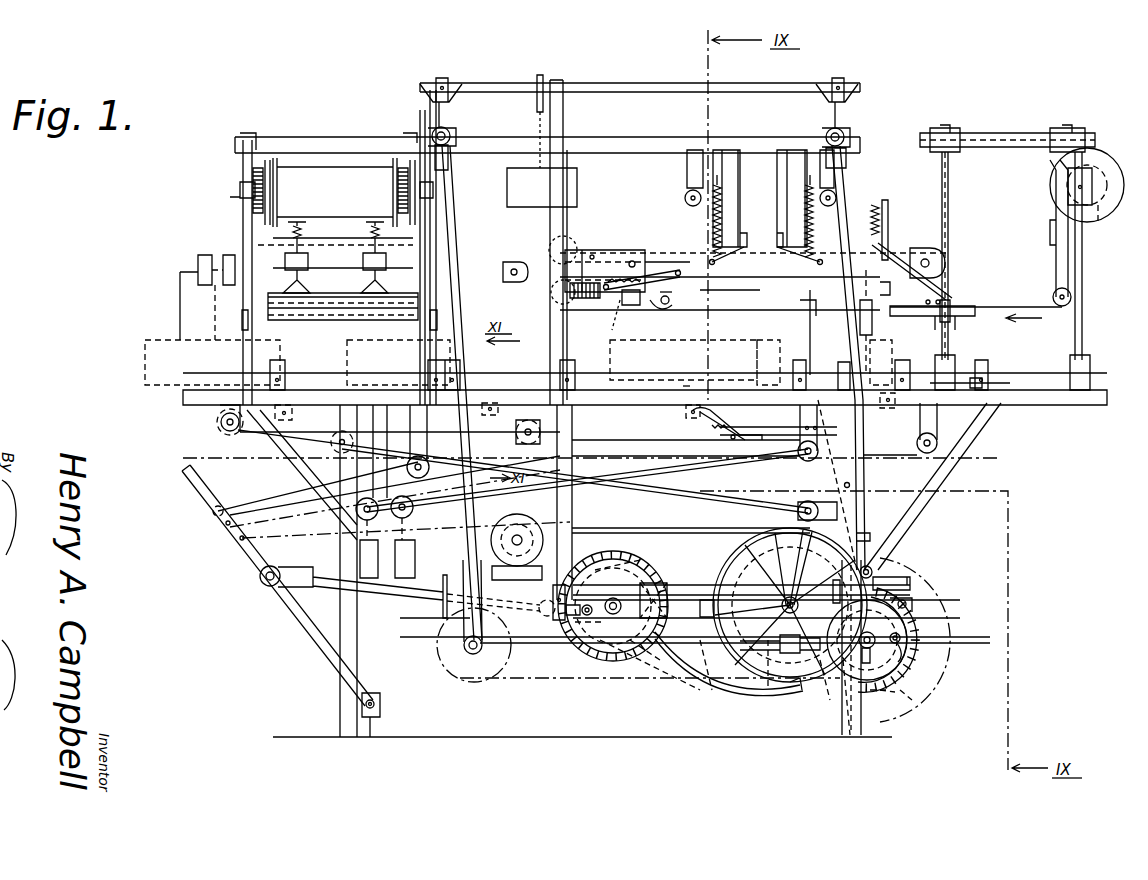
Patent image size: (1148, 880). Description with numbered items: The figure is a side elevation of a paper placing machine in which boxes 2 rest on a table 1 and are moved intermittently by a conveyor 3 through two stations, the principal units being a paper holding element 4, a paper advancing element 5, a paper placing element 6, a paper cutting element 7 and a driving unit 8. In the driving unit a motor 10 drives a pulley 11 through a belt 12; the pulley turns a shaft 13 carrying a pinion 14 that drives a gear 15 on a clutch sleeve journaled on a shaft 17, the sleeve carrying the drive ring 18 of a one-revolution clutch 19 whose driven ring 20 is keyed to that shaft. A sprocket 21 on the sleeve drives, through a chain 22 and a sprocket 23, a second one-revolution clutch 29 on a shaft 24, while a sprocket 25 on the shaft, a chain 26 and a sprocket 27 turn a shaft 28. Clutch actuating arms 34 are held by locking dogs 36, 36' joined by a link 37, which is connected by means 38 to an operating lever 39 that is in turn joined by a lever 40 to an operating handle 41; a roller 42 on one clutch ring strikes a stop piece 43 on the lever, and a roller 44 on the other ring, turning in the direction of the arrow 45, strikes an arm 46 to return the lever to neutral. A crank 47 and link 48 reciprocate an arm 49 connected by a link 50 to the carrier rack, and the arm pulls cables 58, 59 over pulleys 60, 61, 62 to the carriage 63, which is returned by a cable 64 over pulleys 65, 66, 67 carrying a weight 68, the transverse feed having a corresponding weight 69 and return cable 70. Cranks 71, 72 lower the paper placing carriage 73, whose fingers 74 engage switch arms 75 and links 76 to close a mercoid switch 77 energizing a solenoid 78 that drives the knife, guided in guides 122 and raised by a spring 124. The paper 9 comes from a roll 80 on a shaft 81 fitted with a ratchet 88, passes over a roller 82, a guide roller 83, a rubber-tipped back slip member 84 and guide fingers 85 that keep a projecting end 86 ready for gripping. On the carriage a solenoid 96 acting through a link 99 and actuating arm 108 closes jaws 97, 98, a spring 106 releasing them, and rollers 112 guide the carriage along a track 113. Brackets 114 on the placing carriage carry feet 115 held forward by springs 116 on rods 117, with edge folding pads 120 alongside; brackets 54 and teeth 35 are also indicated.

The table 1 is at (1061, 397).
The boxes 2 is at (758, 356).
The intermittent conveyor 3 is at (684, 377).
The paper holding element 4 is at (294, 212).
The paper advancing element 5 is at (607, 252).
The paper placing element 6 is at (749, 190).
The paper cutting element 7 is at (414, 265).
The driving unit 8 is at (930, 630).
The paper 9 is at (1001, 307).
The motor 10 is at (520, 520).
The pulley 11 is at (746, 552).
The belt 12 is at (690, 530).
The shaft 13 is at (775, 575).
The pinion 14 is at (752, 680).
The gear 15 is at (914, 700).
The shaft 17 is at (873, 648).
The clutch drive ring 18 is at (605, 620).
The clutch 19 is at (870, 697).
The driven clutch ring 20 is at (908, 680).
The sprocket 21 is at (890, 688).
The chain 22 is at (677, 650).
The sprocket 23 is at (615, 562).
The shaft 24 is at (612, 616).
The sprocket 25 is at (851, 733).
The chain 26 is at (646, 682).
The sprocket 27 is at (442, 668).
The shaft 28 is at (472, 654).
The clutch 29 is at (604, 558).
The clutch actuating arms 34 is at (646, 645).
The teeth 35 is at (628, 570).
The locking dog 36 is at (662, 586).
The locking dog 36' is at (780, 679).
The link 37 is at (712, 680).
The connecting means 38 is at (744, 600).
The operating lever 39 is at (697, 585).
The lever 40 is at (833, 455).
The operating handle 41 is at (986, 380).
The roller 42 is at (586, 630).
The stop piece 43 is at (566, 620).
The roller 44 is at (912, 608).
The arrow 45 is at (930, 656).
The arm 46 is at (921, 639).
The crank 47 is at (554, 598).
The link 48 is at (408, 586).
The arm 49 is at (196, 488).
The link 50 is at (256, 498).
The bracket 54 is at (290, 390).
The cable 58 is at (596, 478).
The cable 59 is at (768, 528).
The pulley 60 is at (803, 450).
The pulley 61 is at (545, 436).
The pulley 62 is at (514, 270).
The carriage 63 is at (598, 258).
The return cable 64 is at (670, 262).
The pulley 65 is at (935, 260).
The pulley 66 is at (924, 446).
The pulley 67 is at (418, 476).
The returning weight 68 is at (412, 553).
The weight 69 is at (362, 553).
The return cable 70 is at (298, 437).
The crank 71 is at (878, 580).
The crank 72 is at (466, 630).
The paper placing carriage 73 is at (652, 138).
The actuating fingers 74 is at (826, 132).
The switch arms 75 is at (808, 310).
The links 76 is at (778, 432).
The mercoid switch 77 is at (702, 434).
The solenoid 78 is at (884, 247).
The roll of paper 80 is at (1098, 222).
The shaft 81 is at (240, 198).
The roller 82 is at (1066, 304).
The guide roller 83 is at (947, 302).
The rubber-tipped back slip member 84 is at (940, 292).
The guide fingers 85 is at (922, 318).
The projecting end 86 is at (786, 308).
The ratchet 88 is at (258, 207).
The solenoid 96 is at (589, 298).
The movable gripping jaw 97 is at (672, 298).
The gripping jaw 98 is at (660, 312).
The link 99 is at (652, 283).
The spring 106 is at (620, 278).
The actuating arm 108 is at (628, 302).
The spaced rollers 112 is at (556, 240).
The track 113 is at (743, 288).
The brackets 114 is at (742, 222).
The paper placing feet 115 is at (780, 258).
The springs 116 is at (718, 215).
The rods 117 is at (717, 185).
The edge folding pads 120 is at (684, 205).
The guides 122 is at (866, 312).
The spring 124 is at (858, 230).